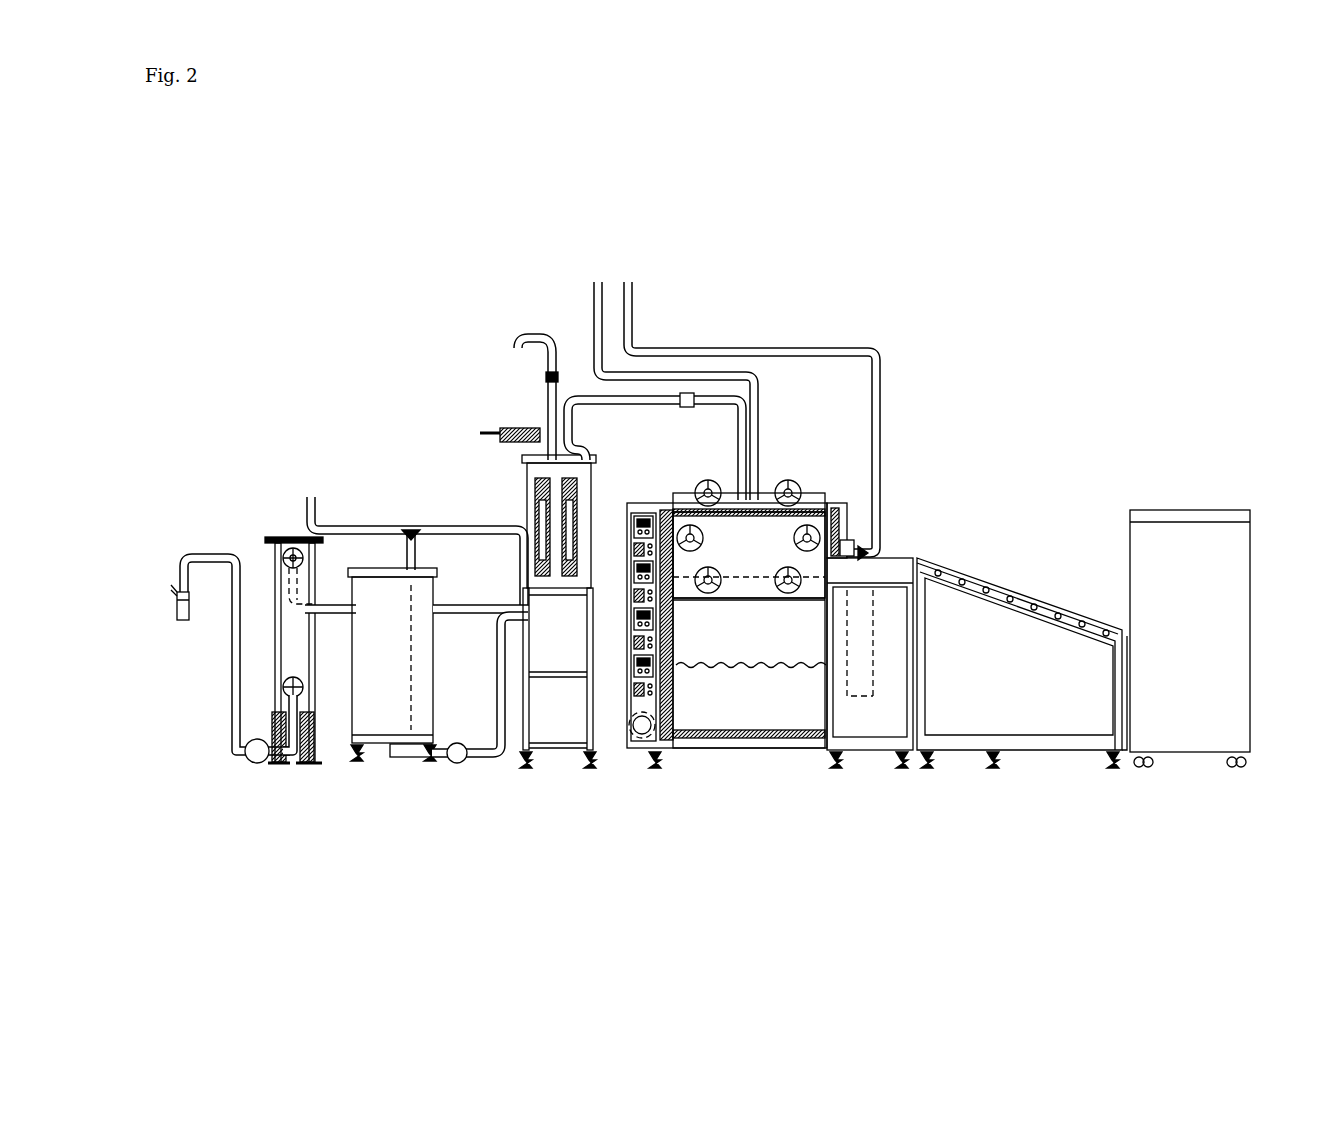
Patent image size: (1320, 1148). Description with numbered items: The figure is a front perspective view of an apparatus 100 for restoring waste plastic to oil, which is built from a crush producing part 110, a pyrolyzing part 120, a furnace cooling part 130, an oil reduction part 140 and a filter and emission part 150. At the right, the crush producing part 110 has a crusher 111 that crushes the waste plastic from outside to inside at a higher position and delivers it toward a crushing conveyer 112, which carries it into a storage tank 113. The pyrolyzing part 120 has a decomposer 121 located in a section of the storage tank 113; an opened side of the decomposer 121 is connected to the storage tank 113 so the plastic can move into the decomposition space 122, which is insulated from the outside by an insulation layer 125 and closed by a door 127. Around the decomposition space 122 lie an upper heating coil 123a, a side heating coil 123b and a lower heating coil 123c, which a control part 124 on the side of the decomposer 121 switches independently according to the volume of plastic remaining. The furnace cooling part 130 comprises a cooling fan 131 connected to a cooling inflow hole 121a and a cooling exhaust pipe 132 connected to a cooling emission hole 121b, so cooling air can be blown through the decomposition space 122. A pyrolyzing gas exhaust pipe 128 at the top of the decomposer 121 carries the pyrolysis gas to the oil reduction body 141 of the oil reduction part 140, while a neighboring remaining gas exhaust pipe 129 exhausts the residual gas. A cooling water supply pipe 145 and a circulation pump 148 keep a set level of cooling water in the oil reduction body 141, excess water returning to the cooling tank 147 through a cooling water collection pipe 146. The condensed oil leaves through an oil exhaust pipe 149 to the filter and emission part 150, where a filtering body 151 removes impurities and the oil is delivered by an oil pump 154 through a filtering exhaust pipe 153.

The apparatus for restoring waste plastic to oil 100 is at (856, 232).
The crush producing part 110 is at (1199, 503).
The crusher 111 is at (1182, 725).
The crushing conveyer 112 is at (1040, 720).
The storage tank 113 is at (872, 730).
The pyrolyzing part 120 is at (773, 474).
The decomposer 121 is at (745, 750).
The cooling inflow hole 121a is at (712, 705).
The cooling emission hole 121b is at (850, 545).
The decomposition space 122 is at (751, 648).
The upper heating coil 123a is at (830, 505).
The side heating coil 123b is at (657, 630).
The lower heating coil 123c is at (808, 712).
The control part 124 is at (633, 653).
The insulation layer 125 is at (847, 520).
The door 127 is at (808, 508).
The pyrolyzing gas exhaust pipe 128 is at (703, 405).
The remaining gas exhaust pipe 129 is at (693, 375).
The furnace cooling part 130 is at (872, 344).
The cooling fan 131 is at (642, 740).
The cooling exhaust pipe 132 is at (785, 350).
The oil reduction part 140 is at (526, 424).
The oil reduction body 141 is at (590, 470).
The cooling water supply pipe 145 is at (410, 762).
The cooling water collection pipe 146 is at (388, 525).
The cooling tank 147 is at (370, 735).
The circulation pump 148 is at (455, 765).
The oil exhaust pipe 149 is at (327, 607).
The filter and emission part 150 is at (293, 526).
The filtering body 151 is at (280, 540).
The filtering exhaust pipe 153 is at (206, 556).
The oil pump 154 is at (256, 765).